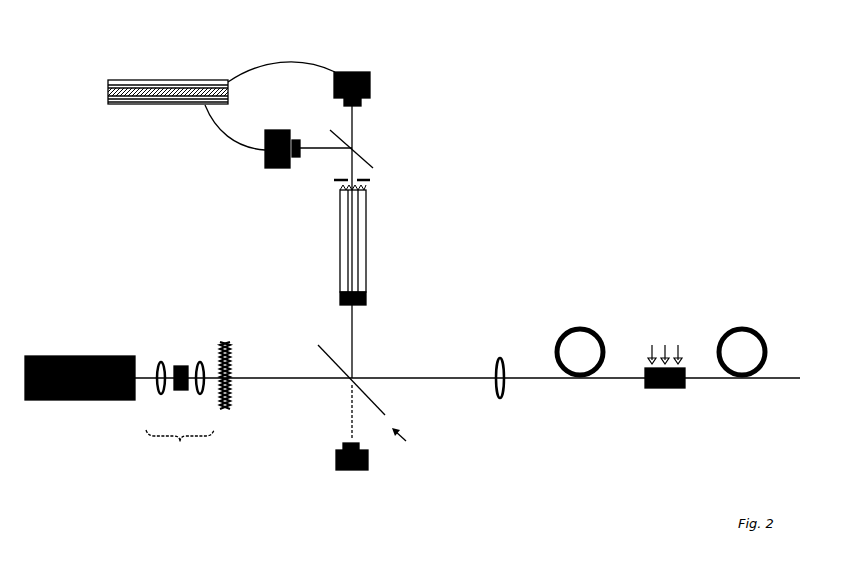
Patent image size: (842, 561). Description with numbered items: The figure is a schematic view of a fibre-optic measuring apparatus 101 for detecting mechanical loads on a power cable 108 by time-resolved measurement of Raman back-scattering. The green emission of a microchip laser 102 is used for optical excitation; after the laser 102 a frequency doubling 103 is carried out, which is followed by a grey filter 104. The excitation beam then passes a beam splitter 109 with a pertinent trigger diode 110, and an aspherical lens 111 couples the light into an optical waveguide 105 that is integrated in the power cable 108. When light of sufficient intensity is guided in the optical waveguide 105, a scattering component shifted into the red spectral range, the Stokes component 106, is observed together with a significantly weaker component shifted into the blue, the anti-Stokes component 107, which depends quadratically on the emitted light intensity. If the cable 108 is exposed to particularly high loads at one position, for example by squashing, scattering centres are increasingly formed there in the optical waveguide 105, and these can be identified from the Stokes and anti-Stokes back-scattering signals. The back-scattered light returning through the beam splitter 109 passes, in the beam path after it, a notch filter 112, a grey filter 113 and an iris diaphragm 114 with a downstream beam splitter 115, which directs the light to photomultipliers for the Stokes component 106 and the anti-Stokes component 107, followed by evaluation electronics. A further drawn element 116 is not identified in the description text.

The fibre-optic measuring apparatus 101 is at (594, 198).
The microchip laser 102 is at (67, 351).
The frequency doubling 103 is at (173, 498).
The grey filter 104 is at (225, 318).
The optical waveguide 105 is at (609, 381).
The Stokes component 106 is at (290, 186).
The anti-Stokes component 107 is at (381, 69).
The power cable 108 is at (684, 368).
The beam splitter 109 is at (430, 470).
The trigger diode 110 is at (349, 496).
The aspherical lens 111 is at (503, 350).
The notch filter 112 is at (376, 308).
The grey filter 113 is at (425, 196).
The iris diaphragm 114 is at (443, 180).
The beam splitter 115 is at (360, 150).
The sample cuvette 116 is at (153, 66).